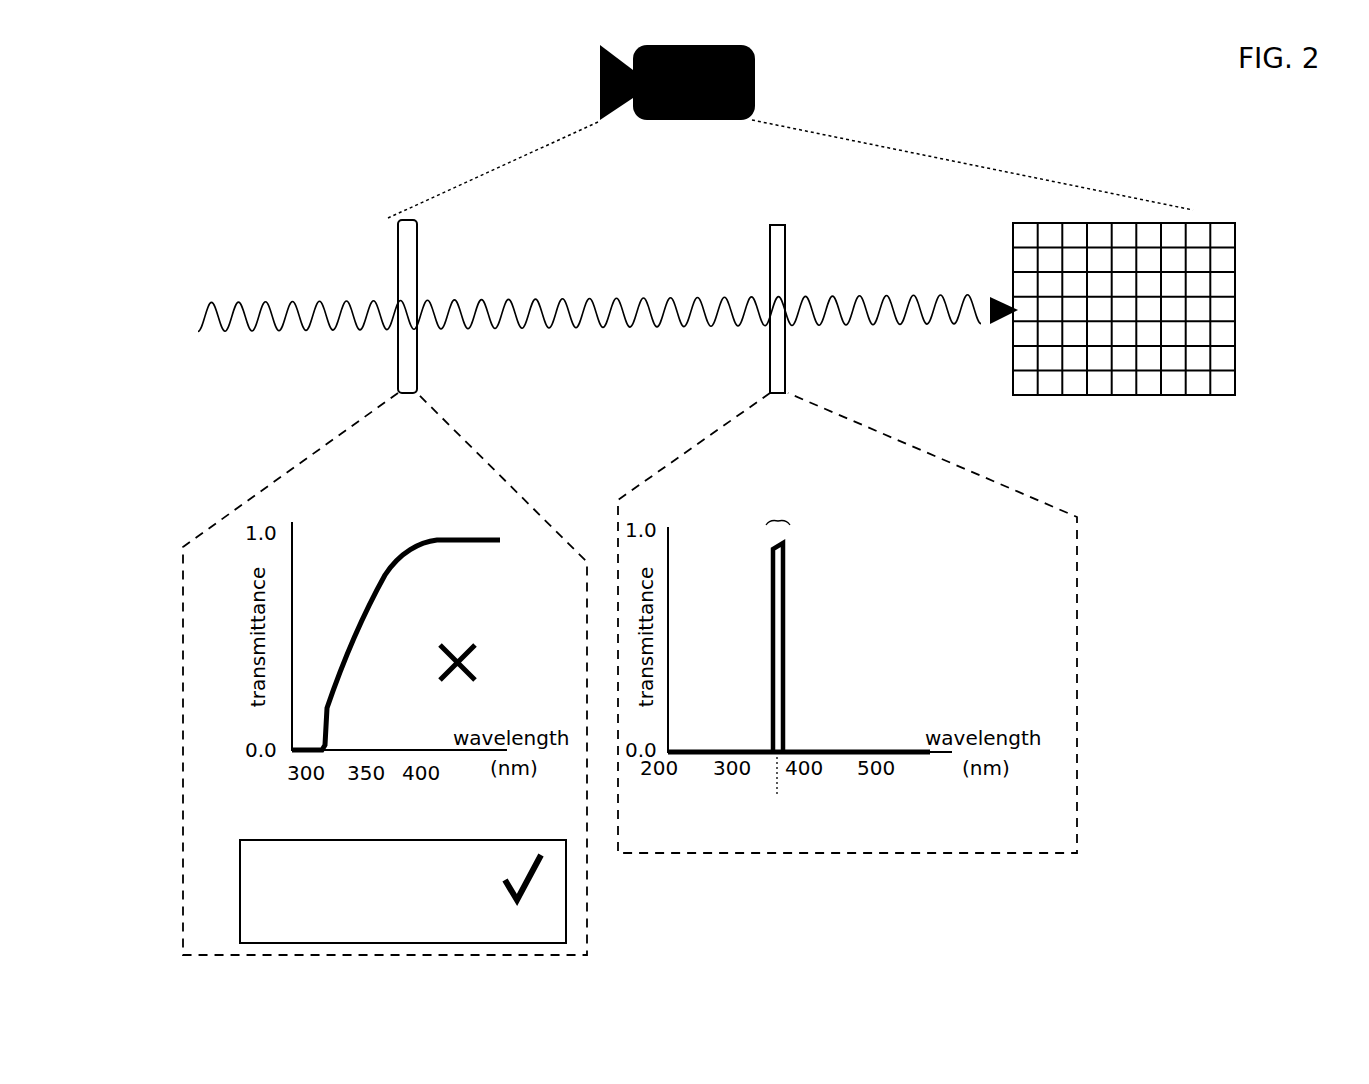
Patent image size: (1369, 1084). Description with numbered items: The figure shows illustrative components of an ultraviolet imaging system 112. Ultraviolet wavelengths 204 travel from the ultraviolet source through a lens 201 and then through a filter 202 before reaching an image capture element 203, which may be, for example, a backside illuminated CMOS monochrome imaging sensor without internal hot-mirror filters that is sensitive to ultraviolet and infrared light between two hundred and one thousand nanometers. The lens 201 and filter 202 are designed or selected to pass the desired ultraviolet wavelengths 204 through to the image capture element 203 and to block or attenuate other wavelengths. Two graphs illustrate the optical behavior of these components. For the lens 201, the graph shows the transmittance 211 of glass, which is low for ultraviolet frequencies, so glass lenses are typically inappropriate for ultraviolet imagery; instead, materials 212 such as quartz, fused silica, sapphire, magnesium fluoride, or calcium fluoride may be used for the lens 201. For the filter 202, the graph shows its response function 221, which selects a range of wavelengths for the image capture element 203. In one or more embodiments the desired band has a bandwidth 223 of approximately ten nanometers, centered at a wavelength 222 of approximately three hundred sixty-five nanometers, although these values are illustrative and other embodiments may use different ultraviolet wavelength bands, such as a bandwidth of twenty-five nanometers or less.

The ultraviolet imaging system 112 is at (675, 120).
The lens 201 is at (398, 298).
The filter 202 is at (763, 267).
The image capture element 203 is at (1012, 268).
The ultraviolet wavelengths 204 is at (205, 312).
The transmittance of glass 211 is at (392, 560).
The materials 212 is at (240, 883).
The response function 221 is at (786, 645).
The wavelength 222 is at (800, 808).
The bandwidth 223 is at (797, 503).